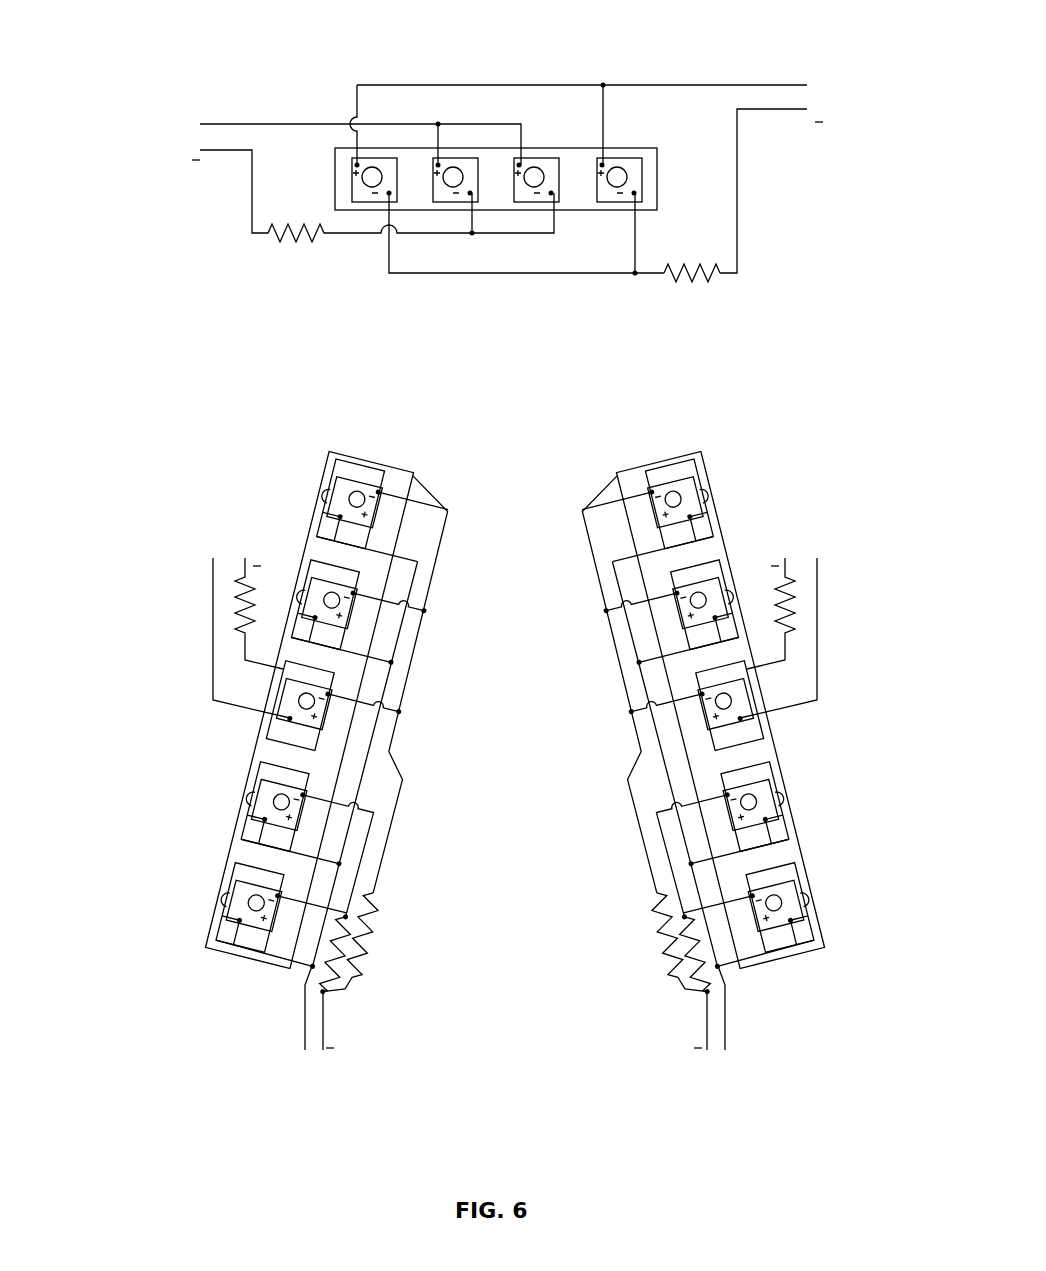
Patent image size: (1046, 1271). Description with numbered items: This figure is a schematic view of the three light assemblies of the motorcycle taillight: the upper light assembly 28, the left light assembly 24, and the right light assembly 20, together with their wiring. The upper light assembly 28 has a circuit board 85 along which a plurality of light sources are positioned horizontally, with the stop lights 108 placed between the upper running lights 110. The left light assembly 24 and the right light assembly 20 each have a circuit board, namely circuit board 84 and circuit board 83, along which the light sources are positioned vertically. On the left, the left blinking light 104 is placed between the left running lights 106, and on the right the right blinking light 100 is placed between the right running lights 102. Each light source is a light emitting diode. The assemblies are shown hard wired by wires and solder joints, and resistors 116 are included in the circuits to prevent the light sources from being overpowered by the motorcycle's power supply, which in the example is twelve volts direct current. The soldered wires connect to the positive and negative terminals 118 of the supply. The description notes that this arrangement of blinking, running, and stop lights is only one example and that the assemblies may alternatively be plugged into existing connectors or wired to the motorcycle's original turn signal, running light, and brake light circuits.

The upper light assembly 28 is at (212, 50).
The upper running lights 110 is at (387, 157).
The stop lights 108 is at (472, 157).
The circuit board 85 is at (650, 185).
The resistors 116 is at (706, 280).
The left light assembly 24 is at (226, 452).
The circuit board 84 is at (415, 485).
The left running lights 106 is at (303, 596).
The left blinking light 104 is at (290, 719).
The right light assembly 20 is at (576, 465).
The right running lights 102 is at (727, 596).
The right blinking light 100 is at (750, 690).
The circuit board 83 is at (812, 852).
The positive and negative terminals 118 is at (752, 1048).